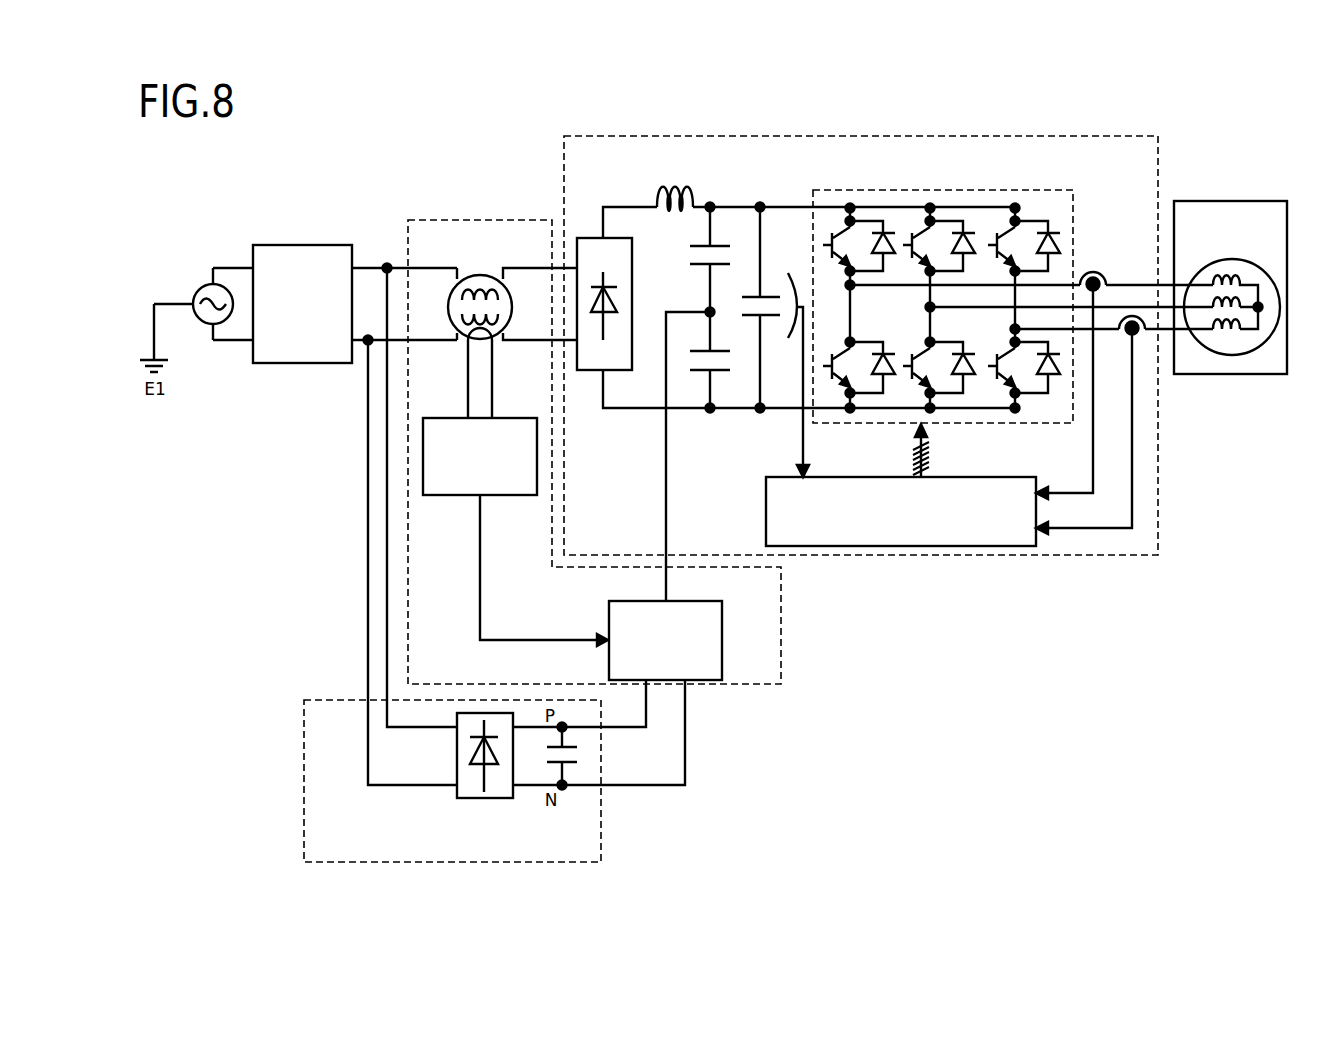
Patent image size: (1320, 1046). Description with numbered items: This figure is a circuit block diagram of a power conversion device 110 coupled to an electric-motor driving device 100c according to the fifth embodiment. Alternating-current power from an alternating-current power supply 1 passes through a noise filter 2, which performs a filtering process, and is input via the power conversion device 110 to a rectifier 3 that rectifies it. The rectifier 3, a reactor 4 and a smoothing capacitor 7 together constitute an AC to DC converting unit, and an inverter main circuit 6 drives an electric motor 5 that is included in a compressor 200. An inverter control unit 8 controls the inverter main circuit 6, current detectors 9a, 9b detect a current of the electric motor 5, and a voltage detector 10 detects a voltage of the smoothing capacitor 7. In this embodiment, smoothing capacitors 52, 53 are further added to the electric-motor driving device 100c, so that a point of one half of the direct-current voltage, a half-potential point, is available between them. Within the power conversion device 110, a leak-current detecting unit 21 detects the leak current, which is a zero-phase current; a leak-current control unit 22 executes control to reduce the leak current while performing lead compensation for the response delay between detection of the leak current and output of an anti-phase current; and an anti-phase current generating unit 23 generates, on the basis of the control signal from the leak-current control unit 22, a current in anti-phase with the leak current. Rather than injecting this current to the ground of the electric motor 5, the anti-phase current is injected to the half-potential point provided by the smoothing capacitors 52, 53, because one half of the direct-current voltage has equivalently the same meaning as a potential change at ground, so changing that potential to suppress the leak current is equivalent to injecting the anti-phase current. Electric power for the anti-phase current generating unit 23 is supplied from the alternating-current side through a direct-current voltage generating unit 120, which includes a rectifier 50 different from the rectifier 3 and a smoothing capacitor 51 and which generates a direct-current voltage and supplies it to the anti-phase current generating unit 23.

The alternating-current power supply 1 is at (209, 288).
The noise filter 2 is at (306, 245).
The rectifier 3 is at (585, 238).
The reactor 4 is at (672, 187).
The electric motor 5 is at (1228, 265).
The inverter main circuit 6 is at (872, 192).
The smoothing capacitor 7 is at (750, 297).
The inverter control unit 8 is at (978, 477).
The current detector 9a is at (1092, 272).
The current detector 9b is at (1132, 316).
The voltage detector 10 is at (788, 272).
The leak-current detecting unit 21 is at (480, 275).
The leak-current control unit 22 is at (517, 418).
The anti-phase current generating unit 23 is at (695, 601).
The rectifier 50 is at (500, 798).
The smoothing capacitor 51 is at (565, 766).
The smoothing capacitor 52 is at (702, 268).
The smoothing capacitor 53 is at (712, 351).
The electric-motor driving device 100c is at (873, 136).
The power conversion device 110 is at (518, 220).
The direct-current voltage generating unit 120 is at (316, 700).
The compressor 200 is at (1224, 201).